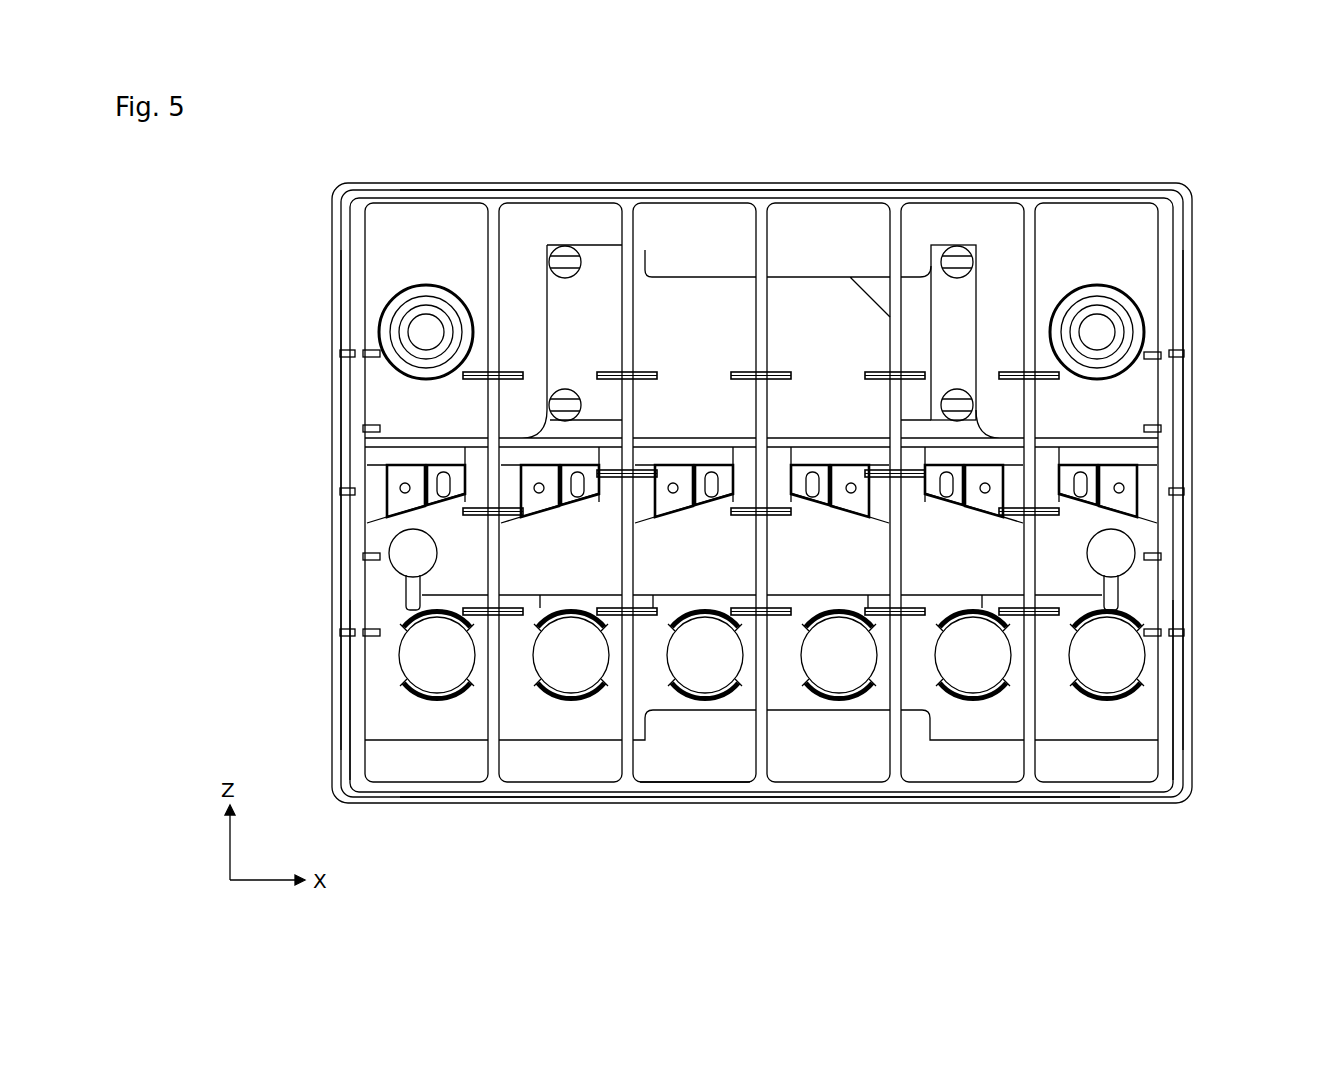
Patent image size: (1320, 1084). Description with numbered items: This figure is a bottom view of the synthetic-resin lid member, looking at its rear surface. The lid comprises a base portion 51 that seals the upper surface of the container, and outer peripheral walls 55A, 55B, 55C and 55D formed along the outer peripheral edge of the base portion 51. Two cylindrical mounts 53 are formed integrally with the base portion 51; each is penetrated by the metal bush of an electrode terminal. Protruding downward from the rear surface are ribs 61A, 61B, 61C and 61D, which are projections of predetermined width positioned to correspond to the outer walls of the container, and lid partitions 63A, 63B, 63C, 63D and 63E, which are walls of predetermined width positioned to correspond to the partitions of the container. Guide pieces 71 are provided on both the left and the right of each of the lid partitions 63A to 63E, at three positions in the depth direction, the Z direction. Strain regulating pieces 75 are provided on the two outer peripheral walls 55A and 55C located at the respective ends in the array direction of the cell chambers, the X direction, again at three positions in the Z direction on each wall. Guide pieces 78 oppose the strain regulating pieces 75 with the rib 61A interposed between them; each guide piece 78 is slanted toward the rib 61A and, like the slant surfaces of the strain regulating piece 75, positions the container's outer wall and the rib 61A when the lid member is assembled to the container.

The base portion 51 is at (1140, 240).
The cylindrical mount 53 is at (423, 307).
The outer peripheral wall 55A is at (346, 540).
The outer peripheral wall 55B is at (830, 803).
The outer peripheral wall 55C is at (1190, 540).
The outer peripheral wall 55D is at (745, 183).
The rib 61A is at (355, 690).
The rib 61B is at (695, 790).
The rib 61C is at (1165, 725).
The rib 61D is at (447, 197).
The lid partition 63A is at (500, 258).
The lid partition 63B is at (633, 258).
The lid partition 63C is at (767, 258).
The lid partition 63D is at (902, 258).
The lid partition 63E is at (1035, 258).
The guide piece 71 is at (511, 371).
The strain regulating piece 75 is at (348, 352).
The guide piece 78 is at (372, 357).